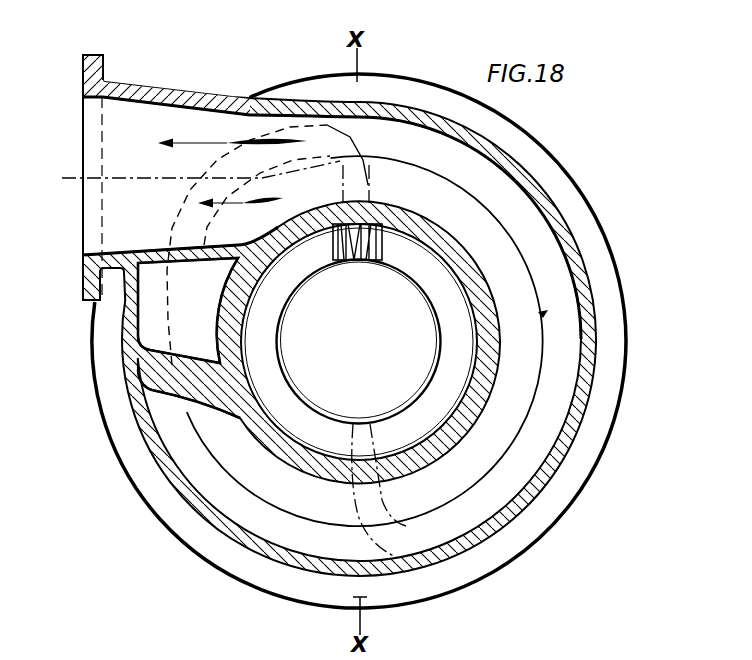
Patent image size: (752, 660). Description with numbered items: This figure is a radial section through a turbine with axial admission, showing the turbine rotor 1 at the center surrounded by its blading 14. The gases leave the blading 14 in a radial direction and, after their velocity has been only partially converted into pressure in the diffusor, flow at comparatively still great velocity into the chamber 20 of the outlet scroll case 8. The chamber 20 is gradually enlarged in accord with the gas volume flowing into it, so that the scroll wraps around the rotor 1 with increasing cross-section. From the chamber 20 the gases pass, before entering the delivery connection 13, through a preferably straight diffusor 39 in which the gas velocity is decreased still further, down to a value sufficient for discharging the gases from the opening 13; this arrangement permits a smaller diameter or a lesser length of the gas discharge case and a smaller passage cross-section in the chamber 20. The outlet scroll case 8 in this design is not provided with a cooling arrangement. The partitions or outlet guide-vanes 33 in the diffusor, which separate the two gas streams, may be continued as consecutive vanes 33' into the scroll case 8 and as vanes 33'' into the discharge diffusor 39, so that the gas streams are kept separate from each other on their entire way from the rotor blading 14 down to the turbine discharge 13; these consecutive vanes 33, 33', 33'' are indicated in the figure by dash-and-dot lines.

The turbine rotor 1 is at (359, 342).
The outlet scroll case 8 is at (222, 527).
The delivery connection 13 is at (110, 123).
The blading 14 is at (357, 262).
The chamber 20 is at (466, 150).
The outlet guide-vanes 33 is at (386, 343).
The consecutive vanes 33' is at (409, 341).
The consecutive vanes 33'' is at (195, 162).
The straight diffusor 39 is at (107, 100).